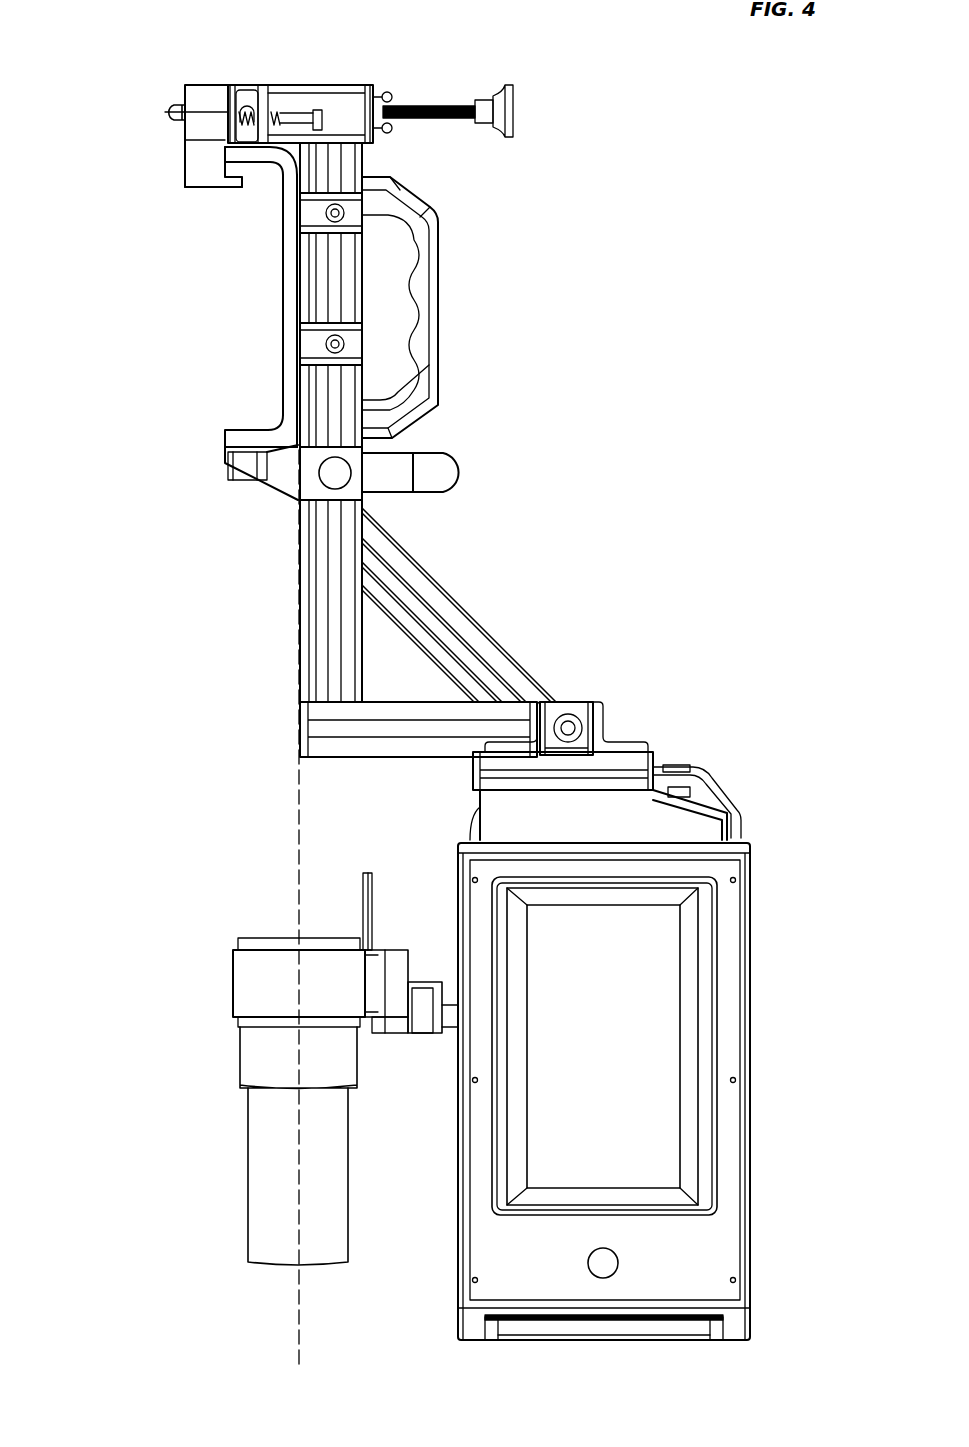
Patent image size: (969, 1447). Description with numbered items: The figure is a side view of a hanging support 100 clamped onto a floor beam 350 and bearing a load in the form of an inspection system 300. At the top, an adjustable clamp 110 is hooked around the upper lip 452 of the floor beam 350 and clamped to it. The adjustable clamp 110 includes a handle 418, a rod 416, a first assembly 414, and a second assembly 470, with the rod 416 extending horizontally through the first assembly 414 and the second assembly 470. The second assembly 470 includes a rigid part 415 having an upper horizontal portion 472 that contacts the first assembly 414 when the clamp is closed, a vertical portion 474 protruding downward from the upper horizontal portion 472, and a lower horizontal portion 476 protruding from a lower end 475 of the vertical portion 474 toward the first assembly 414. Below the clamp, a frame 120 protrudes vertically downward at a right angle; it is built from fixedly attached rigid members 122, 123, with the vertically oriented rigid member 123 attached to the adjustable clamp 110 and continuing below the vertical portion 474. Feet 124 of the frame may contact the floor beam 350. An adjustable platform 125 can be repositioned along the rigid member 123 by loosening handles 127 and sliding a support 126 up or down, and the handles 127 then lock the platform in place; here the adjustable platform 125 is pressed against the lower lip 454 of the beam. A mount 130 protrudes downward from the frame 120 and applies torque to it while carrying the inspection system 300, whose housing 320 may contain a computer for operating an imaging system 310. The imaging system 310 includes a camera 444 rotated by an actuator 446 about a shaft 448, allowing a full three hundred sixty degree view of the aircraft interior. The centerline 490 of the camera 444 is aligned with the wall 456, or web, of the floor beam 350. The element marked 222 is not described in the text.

The hanging support 100 is at (706, 214).
The adjustable clamp 110 is at (523, 77).
The frame 120 is at (492, 355).
The rigid member 122 is at (470, 605).
The rigid member 123 is at (350, 272).
The feet 124 is at (348, 212).
The adjustable platform 125 is at (225, 455).
The support 126 is at (255, 480).
The handles 127 is at (455, 460).
The mount 130 is at (785, 695).
The horizontal beam 222 is at (400, 760).
The inspection system 300 is at (785, 845).
The imaging system 310 is at (275, 912).
The housing 320 is at (458, 1245).
The floor beam 350 is at (220, 333).
The first assembly 414 is at (365, 45).
The rigid part 415 is at (129, 117).
The rod 416 is at (445, 120).
The handle 418 is at (493, 92).
The camera 444 is at (233, 975).
The actuator 446 is at (420, 1025).
The shaft 448 is at (450, 1020).
The upper lip 452 is at (268, 168).
The lower lip 454 is at (245, 430).
The wall 456 is at (283, 275).
The second assembly 470 is at (232, 45).
The upper horizontal portion 472 is at (197, 85).
The vertical portion 474 is at (185, 145).
The lower end 475 is at (184, 206).
The lower horizontal portion 476 is at (223, 190).
The centerline 490 is at (298, 1307).